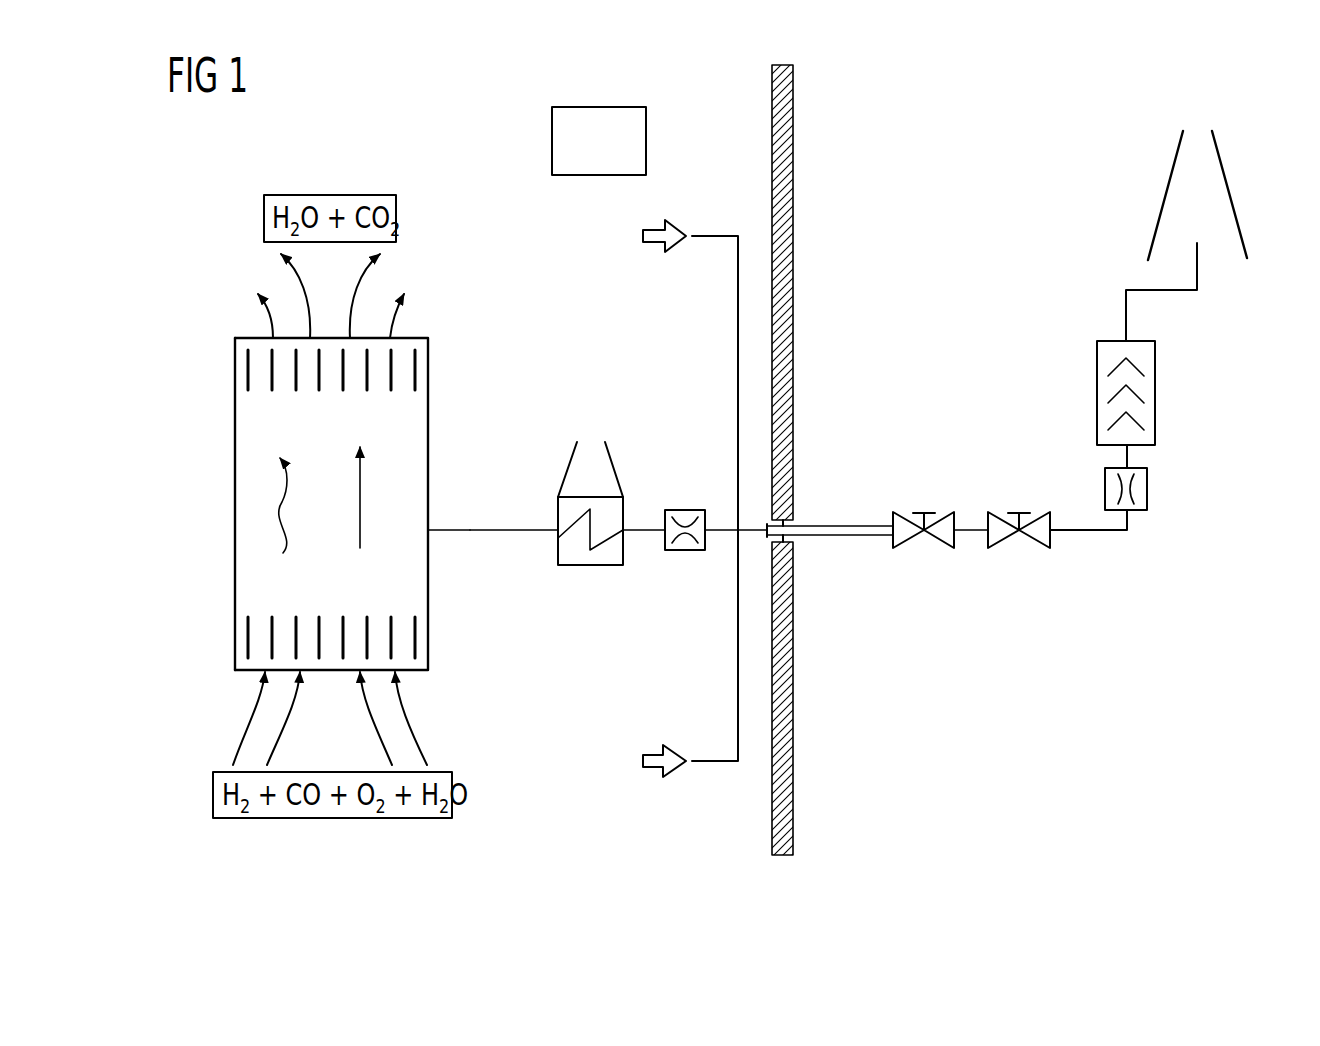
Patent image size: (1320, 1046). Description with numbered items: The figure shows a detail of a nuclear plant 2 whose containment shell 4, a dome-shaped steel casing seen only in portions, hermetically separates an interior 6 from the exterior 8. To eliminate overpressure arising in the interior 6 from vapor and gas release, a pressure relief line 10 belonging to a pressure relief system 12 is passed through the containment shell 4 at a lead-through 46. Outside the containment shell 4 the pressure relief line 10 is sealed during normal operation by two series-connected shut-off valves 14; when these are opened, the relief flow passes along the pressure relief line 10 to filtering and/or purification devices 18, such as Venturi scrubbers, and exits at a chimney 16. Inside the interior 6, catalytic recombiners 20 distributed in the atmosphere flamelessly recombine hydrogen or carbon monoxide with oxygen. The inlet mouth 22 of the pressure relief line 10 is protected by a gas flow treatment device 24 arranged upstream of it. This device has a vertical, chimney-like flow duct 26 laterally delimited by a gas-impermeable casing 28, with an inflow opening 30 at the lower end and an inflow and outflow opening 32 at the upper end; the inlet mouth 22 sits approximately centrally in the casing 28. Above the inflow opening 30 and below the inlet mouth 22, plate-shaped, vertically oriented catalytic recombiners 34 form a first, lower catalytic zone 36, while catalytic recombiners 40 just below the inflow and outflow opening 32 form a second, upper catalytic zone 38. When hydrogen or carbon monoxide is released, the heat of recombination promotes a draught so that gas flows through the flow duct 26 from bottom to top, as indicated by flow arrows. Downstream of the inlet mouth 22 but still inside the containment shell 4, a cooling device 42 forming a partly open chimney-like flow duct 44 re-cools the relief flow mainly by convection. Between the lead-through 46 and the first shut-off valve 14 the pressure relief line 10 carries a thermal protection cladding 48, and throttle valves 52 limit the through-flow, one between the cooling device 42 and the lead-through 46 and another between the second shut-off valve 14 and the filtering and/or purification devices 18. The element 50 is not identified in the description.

The nuclear plant 2 is at (1070, 841).
The containment shell 4 is at (788, 160).
The interior 6 is at (423, 99).
The exterior 8 is at (1035, 99).
The pressure relief line 10 is at (484, 527).
The pressure relief system 12 is at (555, 724).
The shut-off valves 14 is at (909, 550).
The chimney 16 is at (1224, 170).
The filtering and/or purification devices 18 is at (1155, 400).
The catalytic recombiners 20 is at (646, 143).
The inlet mouth 22 is at (431, 533).
The gas flow treatment device 24 is at (434, 446).
The flow duct 26 is at (247, 517).
The casing 28 is at (235, 437).
The inflow opening 30 is at (416, 676).
The inflow and outflow opening 32 is at (416, 332).
The catalytic recombiners 34 is at (243, 640).
The first catalytic zone 36 is at (422, 636).
The second catalytic zone 38 is at (422, 366).
The catalytic recombiners 40 is at (243, 368).
The cooling device 42 is at (592, 566).
The flow duct 44 is at (592, 448).
The lead-through 46 is at (791, 521).
The thermal protection cladding 48 is at (858, 524).
The flow meter 50 is at (687, 508).
The throttle valve 52 is at (1147, 490).